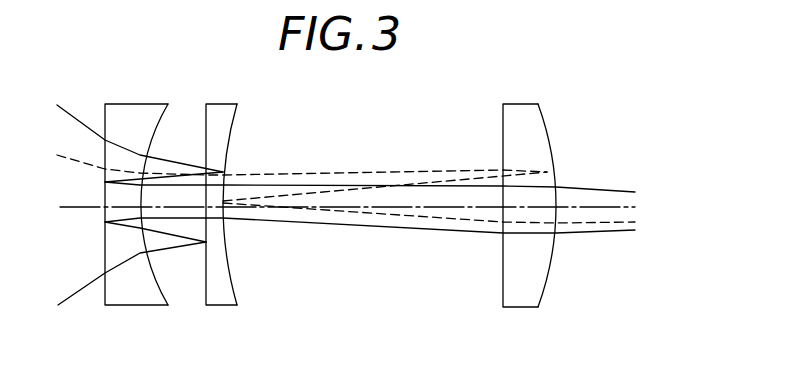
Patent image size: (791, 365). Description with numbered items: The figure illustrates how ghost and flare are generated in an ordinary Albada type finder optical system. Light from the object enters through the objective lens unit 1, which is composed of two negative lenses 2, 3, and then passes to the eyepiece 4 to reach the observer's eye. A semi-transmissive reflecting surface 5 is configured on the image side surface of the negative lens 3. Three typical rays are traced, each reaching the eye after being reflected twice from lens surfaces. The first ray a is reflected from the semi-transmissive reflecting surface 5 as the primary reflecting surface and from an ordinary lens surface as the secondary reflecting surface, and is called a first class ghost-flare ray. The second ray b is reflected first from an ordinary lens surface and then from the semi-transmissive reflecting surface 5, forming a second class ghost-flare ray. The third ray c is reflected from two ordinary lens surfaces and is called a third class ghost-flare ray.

The objective lens unit 1 is at (242, 100).
The negative lens 2 is at (128, 308).
The negative lens 3 is at (225, 309).
The eyepiece 4 is at (527, 103).
The semi-transmissive reflecting surface 5 is at (238, 112).
The first ray a is at (347, 145).
The second ray b is at (347, 184).
The third ray c is at (347, 267).